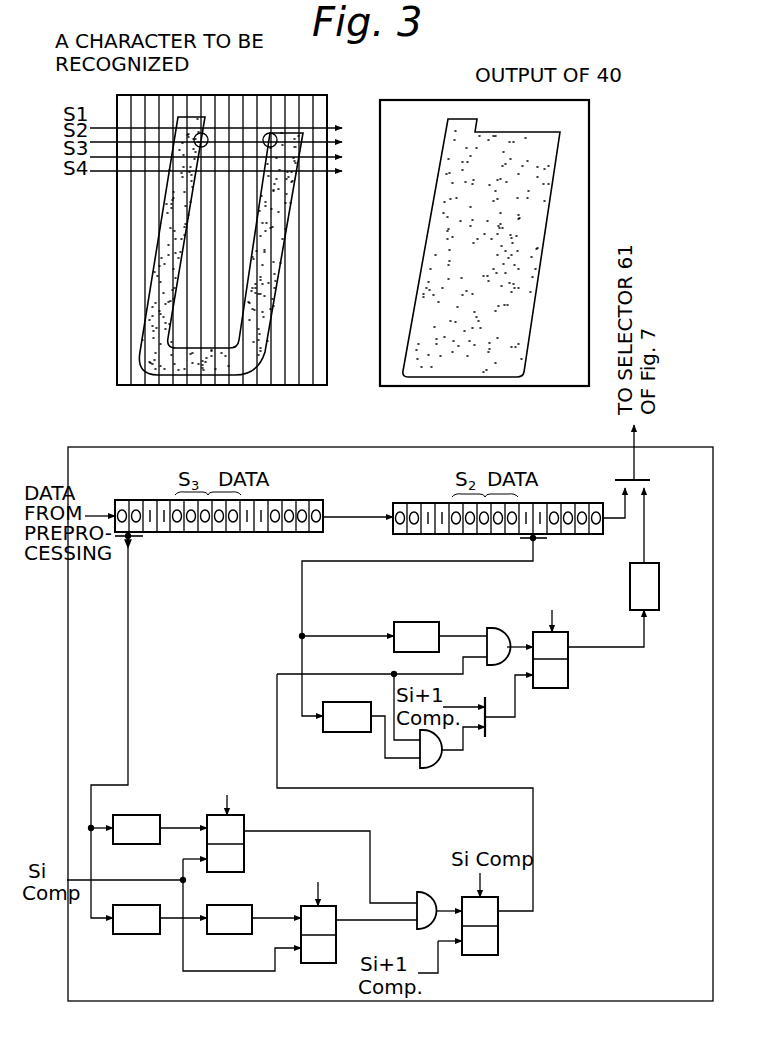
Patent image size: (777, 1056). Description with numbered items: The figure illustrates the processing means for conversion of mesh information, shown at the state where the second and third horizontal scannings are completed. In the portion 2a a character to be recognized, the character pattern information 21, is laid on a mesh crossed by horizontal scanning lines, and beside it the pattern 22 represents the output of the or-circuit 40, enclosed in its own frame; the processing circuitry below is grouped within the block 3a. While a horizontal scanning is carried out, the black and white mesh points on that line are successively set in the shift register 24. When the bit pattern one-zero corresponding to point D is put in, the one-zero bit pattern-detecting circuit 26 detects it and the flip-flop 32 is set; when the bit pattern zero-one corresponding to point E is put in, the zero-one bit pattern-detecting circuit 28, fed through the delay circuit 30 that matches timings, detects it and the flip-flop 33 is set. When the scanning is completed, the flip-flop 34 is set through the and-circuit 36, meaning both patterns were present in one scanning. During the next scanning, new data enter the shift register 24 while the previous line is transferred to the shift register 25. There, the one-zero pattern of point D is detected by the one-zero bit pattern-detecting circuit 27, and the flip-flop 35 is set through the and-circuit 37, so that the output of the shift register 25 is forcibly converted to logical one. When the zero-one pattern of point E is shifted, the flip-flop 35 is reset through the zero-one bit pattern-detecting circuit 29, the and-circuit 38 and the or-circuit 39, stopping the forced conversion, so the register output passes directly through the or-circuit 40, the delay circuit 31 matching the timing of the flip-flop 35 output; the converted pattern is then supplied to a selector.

The character pattern mesh 2a is at (117, 268).
The character to be recognized 21 is at (282, 225).
The output pattern of gate 40 22 is at (492, 366).
The shift register 24 is at (178, 533).
The shift register 25 is at (418, 491).
The "1, 0" bit pattern-detecting circuit 26 is at (140, 815).
The "1, 0" bit pattern-detecting circuit 27 is at (425, 612).
The "0, 1" bit pattern-detecting circuit 28 is at (240, 905).
The "0, 1" bit pattern-detecting circuit 29 is at (340, 732).
The delay circuit 30 is at (138, 934).
The delay circuit 31 is at (659, 585).
The flip-flop 32 is at (244, 820).
The flip-flop 33 is at (318, 963).
The flip-flop 34 is at (498, 938).
The flip-flop 35 is at (568, 678).
The and-circuit 36 is at (434, 882).
The and-circuit 37 is at (506, 617).
The and-circuit 38 is at (440, 764).
The or-circuit 39 is at (490, 727).
The or-circuit 40 is at (644, 479).
The detection circuit 3a is at (713, 682).
The point D is at (204, 133).
The point E is at (273, 133).